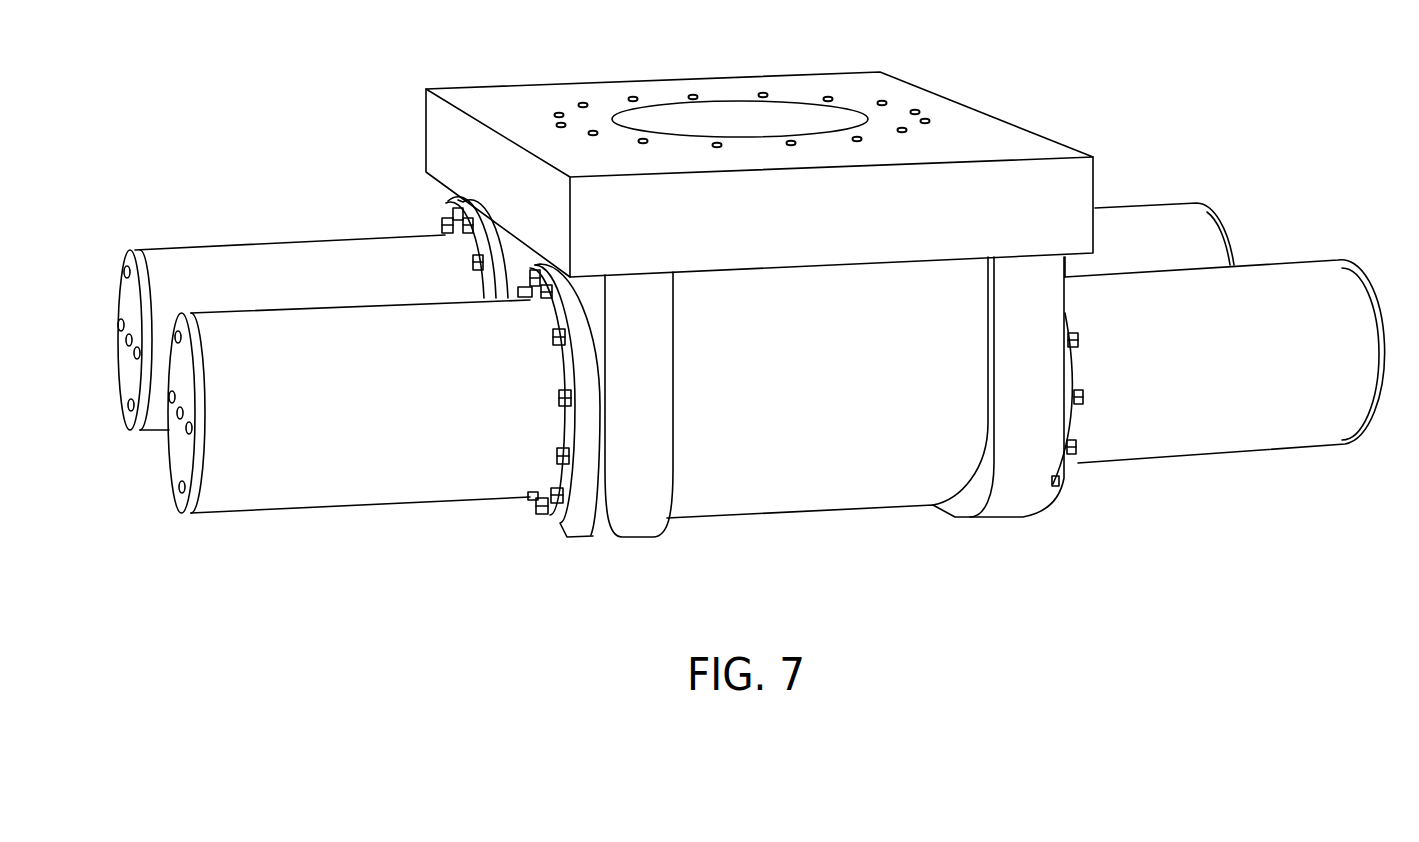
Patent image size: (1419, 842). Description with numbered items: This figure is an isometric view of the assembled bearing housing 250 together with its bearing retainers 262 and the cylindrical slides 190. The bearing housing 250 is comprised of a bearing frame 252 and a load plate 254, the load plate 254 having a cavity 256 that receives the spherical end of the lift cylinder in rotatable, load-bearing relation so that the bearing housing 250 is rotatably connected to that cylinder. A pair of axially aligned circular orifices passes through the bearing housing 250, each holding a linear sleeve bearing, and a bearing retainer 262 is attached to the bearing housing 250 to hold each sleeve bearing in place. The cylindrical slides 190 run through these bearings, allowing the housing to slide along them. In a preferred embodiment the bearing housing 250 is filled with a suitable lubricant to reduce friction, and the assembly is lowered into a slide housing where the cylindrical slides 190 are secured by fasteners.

The bearing housing 250 is at (751, 310).
The bearing frame 252 is at (872, 460).
The load plate 254 is at (498, 102).
The cavity 256 is at (723, 118).
The bearing retainer 262 is at (577, 495).
The cylindrical slide 190 is at (1278, 407).